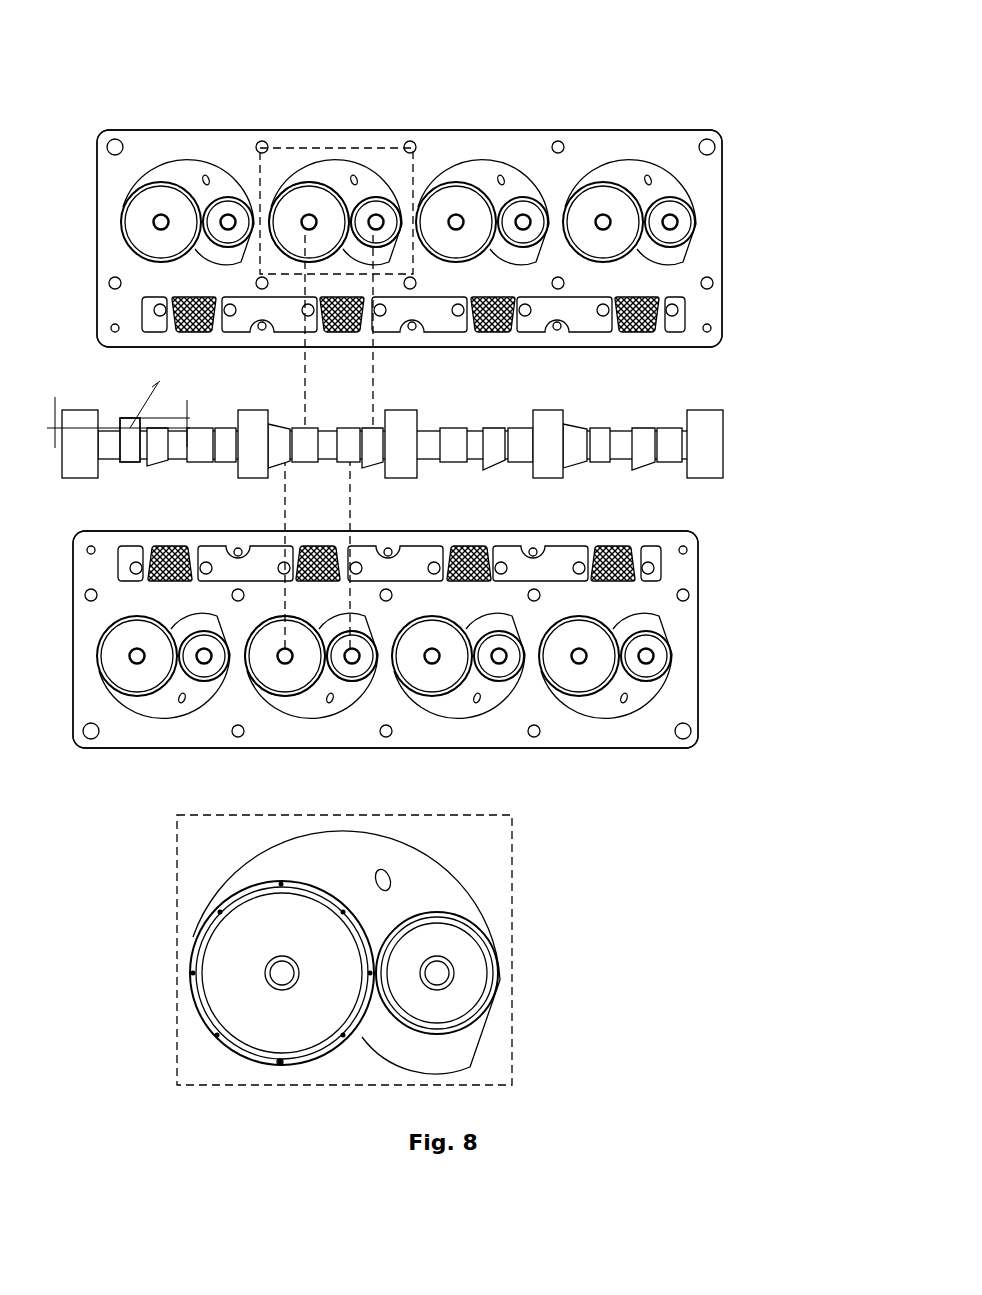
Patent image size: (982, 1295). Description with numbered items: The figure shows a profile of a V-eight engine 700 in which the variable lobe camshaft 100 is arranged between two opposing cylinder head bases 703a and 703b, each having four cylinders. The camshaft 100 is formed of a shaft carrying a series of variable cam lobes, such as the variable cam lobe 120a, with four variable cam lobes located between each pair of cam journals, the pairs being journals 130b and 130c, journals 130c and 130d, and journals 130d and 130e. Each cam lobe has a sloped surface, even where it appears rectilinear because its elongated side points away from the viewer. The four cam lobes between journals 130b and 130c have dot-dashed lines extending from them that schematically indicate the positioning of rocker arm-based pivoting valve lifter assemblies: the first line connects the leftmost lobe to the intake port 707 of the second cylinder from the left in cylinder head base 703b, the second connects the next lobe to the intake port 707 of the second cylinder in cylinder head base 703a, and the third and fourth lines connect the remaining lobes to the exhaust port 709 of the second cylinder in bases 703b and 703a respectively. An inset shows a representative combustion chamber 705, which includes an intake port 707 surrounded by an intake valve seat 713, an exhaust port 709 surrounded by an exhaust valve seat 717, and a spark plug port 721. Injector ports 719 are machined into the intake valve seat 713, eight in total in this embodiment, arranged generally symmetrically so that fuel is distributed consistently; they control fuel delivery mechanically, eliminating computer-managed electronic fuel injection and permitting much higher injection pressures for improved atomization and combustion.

The V-8 engine 700 is at (646, 97).
The cylinder head base 703a is at (298, 150).
The cylinder head base 703b is at (648, 727).
The intake port 707 is at (145, 1030).
The exhaust port 709 is at (548, 1028).
The variable lobe camshaft 100 is at (389, 438).
The cam journal 130b is at (253, 412).
The cam journal 130c is at (397, 465).
The cam journal 130d is at (550, 465).
The cam journal 130e is at (668, 497).
The variable cam lobe 120a is at (75, 488).
The combustion chamber 705 is at (267, 867).
The intake valve seat 713 is at (187, 933).
The exhaust valve seat 717 is at (498, 982).
The injector port 719 is at (280, 1063).
The spark plug port 721 is at (392, 876).